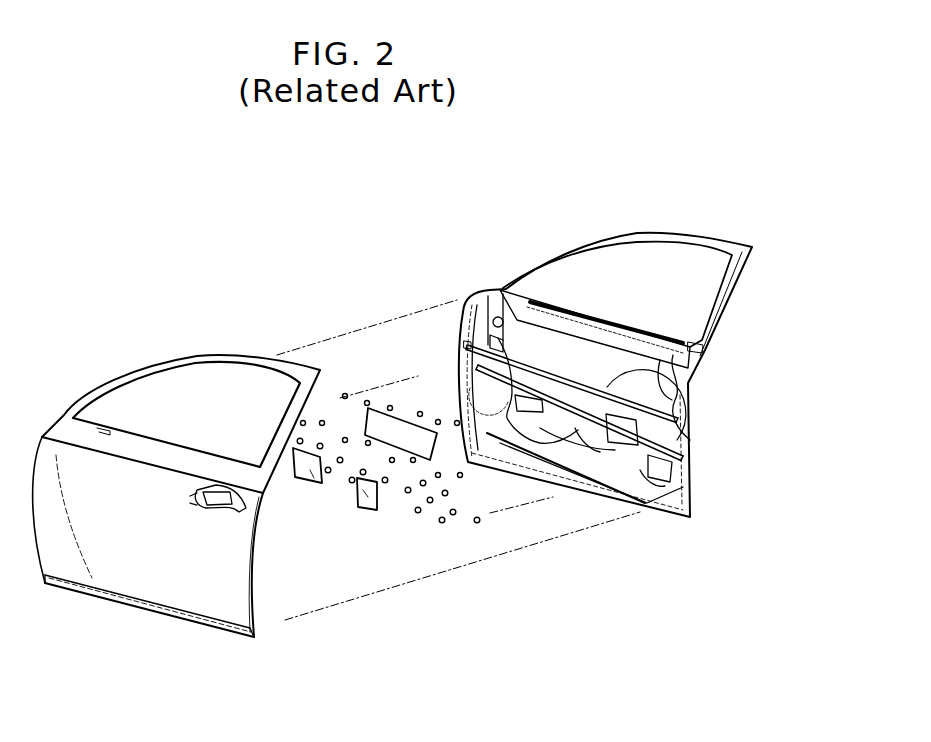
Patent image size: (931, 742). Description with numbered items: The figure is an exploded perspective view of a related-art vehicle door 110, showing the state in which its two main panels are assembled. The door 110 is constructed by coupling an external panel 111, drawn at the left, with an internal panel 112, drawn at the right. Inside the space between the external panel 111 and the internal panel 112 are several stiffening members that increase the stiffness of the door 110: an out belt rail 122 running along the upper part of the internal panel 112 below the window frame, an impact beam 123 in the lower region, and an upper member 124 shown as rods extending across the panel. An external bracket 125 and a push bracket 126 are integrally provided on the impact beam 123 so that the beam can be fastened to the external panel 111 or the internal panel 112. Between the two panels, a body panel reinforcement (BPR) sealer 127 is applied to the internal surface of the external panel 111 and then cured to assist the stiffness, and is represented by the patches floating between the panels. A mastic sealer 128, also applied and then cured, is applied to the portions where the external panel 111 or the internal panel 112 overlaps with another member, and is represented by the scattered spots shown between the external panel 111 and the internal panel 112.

The door 110 is at (82, 200).
The external panel 111 is at (128, 563).
The internal panel 112 is at (690, 490).
The out belt rail 122 is at (570, 315).
The impact beam 123 is at (575, 428).
The upper member 124 is at (688, 383).
The external bracket 125 is at (463, 440).
The push bracket 126 is at (653, 468).
The body panel reinforcement (BPR) sealer 127 is at (398, 433).
The mastic sealer 128 is at (366, 441).